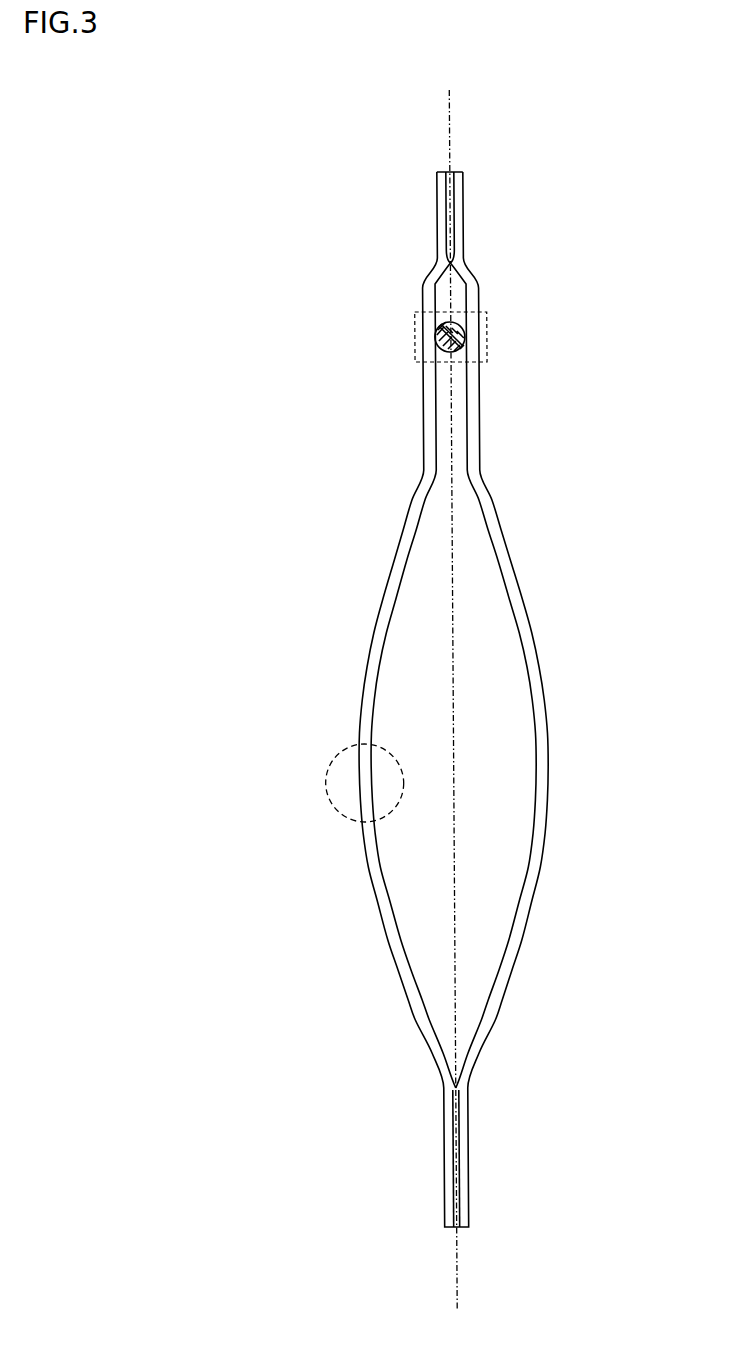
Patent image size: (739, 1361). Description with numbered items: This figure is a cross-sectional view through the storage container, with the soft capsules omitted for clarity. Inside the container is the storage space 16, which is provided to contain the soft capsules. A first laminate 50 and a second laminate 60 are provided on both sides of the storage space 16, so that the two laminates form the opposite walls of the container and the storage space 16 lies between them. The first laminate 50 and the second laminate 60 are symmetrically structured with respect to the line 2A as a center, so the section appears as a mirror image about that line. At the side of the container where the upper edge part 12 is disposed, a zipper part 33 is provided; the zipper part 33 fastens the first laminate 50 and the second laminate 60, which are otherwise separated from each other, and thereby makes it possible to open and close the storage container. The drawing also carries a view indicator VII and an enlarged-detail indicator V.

The upper edge part 12 is at (439, 657).
The line 2A is at (498, 700).
The zipper part 33 is at (492, 337).
The first laminate 50 is at (398, 757).
The second laminate 60 is at (507, 757).
The storage space 16 is at (478, 757).
The section line VII is at (519, 766).
The detail region V is at (342, 806).